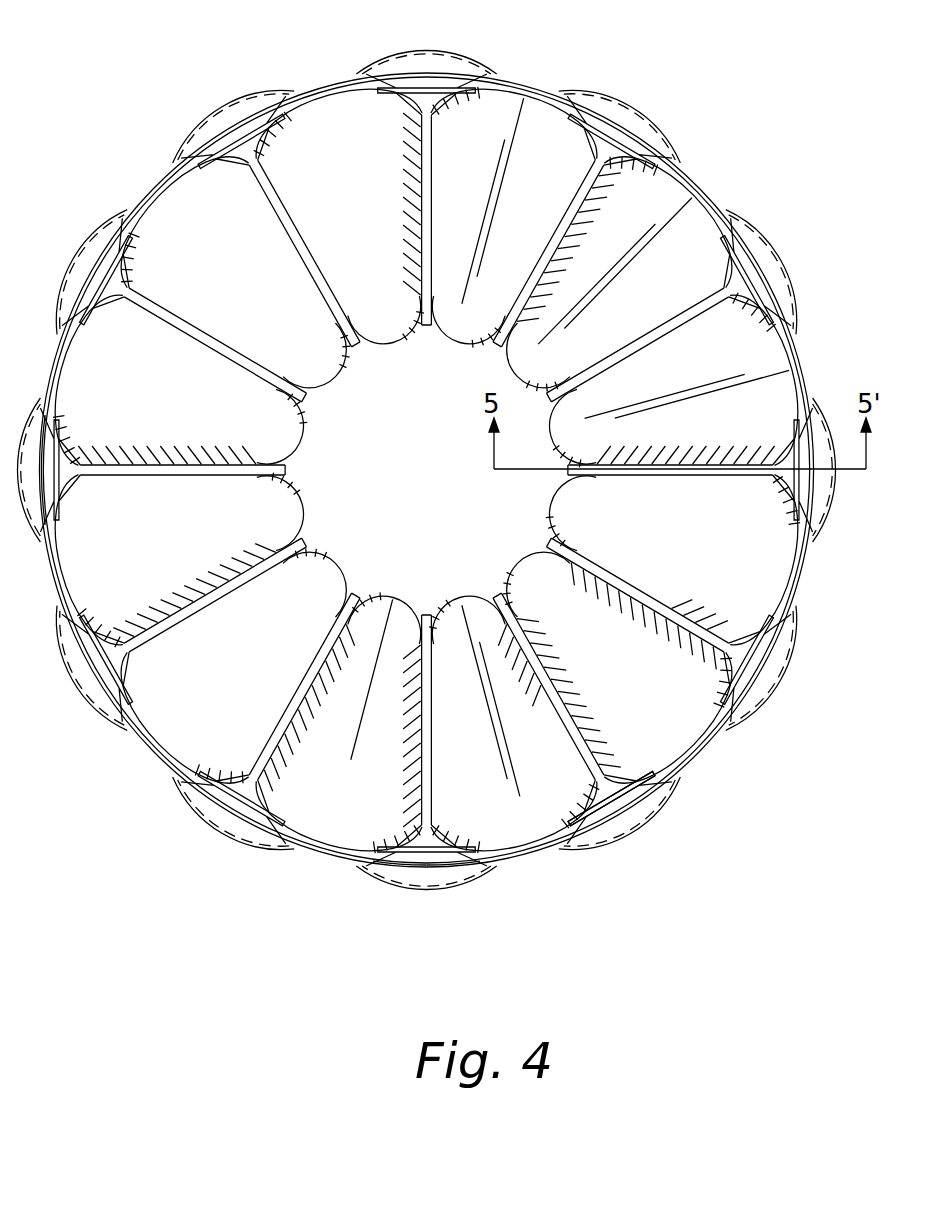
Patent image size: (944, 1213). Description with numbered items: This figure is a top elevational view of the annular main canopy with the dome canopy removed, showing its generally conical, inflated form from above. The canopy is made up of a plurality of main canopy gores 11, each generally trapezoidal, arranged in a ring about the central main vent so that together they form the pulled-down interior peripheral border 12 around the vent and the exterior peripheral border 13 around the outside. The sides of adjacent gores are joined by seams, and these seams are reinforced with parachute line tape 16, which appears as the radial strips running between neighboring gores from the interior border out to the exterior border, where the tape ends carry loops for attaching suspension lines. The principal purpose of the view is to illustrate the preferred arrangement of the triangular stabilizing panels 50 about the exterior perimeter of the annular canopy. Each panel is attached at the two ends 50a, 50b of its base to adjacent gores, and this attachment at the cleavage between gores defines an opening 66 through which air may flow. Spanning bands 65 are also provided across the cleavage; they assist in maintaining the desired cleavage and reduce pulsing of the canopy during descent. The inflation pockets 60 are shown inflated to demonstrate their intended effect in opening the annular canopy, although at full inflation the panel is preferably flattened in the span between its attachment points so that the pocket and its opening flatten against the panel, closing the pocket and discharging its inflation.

The main canopy gores 11 is at (538, 733).
The interior peripheral border 12 is at (337, 552).
The exterior peripheral border 13 is at (130, 742).
The parachute line tape 16 is at (433, 663).
The stabilizing panels 50 is at (783, 652).
The end of panel base 50a is at (42, 540).
The end of panel base 50b is at (333, 860).
The inflation pockets 60 is at (423, 878).
The spanning bands 65 is at (210, 767).
The opening 66 is at (764, 602).